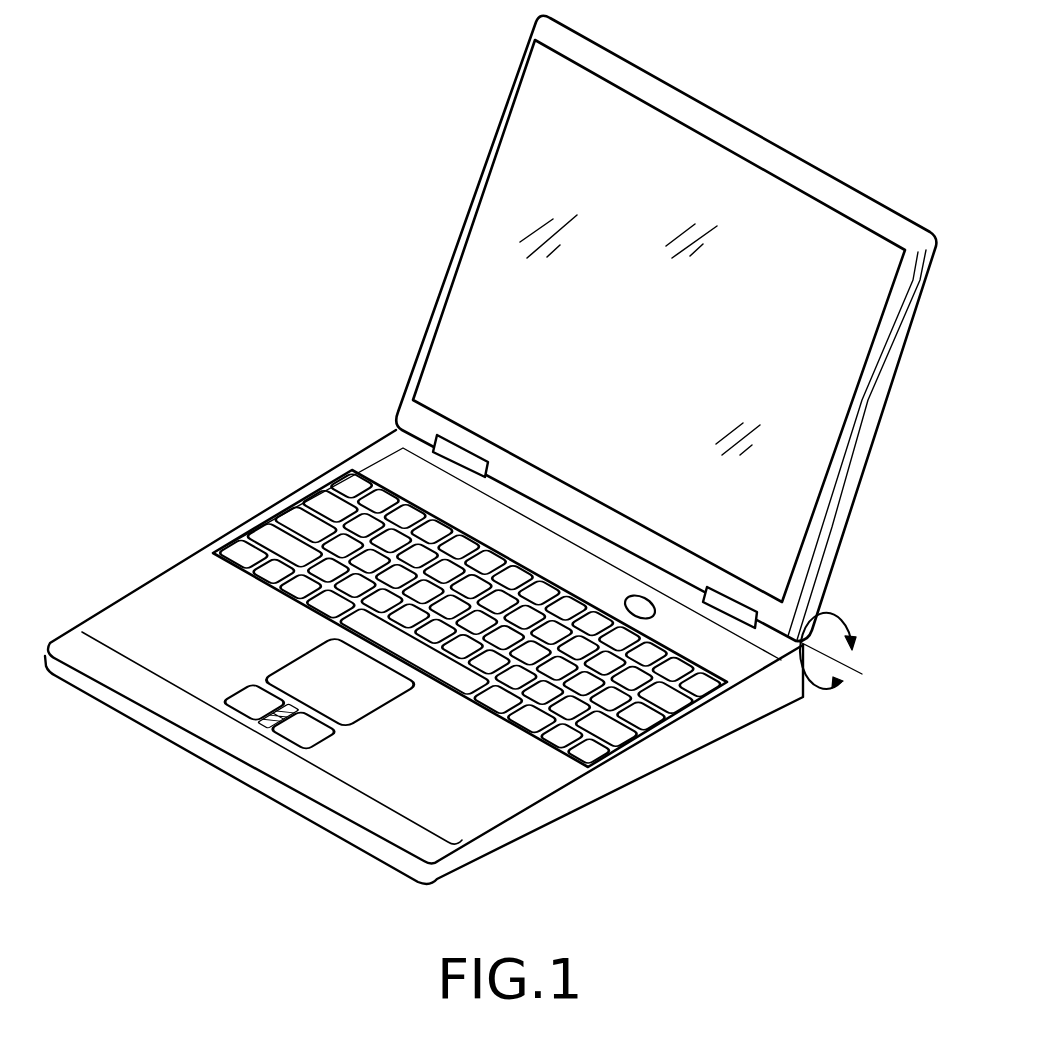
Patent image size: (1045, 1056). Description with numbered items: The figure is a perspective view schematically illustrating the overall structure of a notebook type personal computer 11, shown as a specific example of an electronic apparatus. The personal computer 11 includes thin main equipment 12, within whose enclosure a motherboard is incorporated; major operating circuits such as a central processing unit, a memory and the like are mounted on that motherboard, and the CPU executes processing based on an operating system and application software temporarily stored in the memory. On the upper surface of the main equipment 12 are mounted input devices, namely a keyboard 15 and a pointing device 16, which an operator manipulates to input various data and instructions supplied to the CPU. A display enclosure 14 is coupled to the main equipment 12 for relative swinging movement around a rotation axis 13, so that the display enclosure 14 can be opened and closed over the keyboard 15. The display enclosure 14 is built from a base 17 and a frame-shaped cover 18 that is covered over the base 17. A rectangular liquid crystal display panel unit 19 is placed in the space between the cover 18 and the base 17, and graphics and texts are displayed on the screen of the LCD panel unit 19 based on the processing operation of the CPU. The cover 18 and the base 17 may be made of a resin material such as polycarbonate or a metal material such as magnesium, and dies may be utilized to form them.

The notebook type personal computer 11 is at (350, 399).
The main equipment 12 is at (228, 535).
The rotation axis 13 is at (852, 651).
The display enclosure 14 is at (505, 121).
The keyboard 15 is at (328, 510).
The pointing device 16 is at (377, 697).
The base 17 is at (850, 510).
The frame-shaped cover 18 is at (822, 558).
The liquid crystal display (LCD) panel unit 19 is at (483, 247).